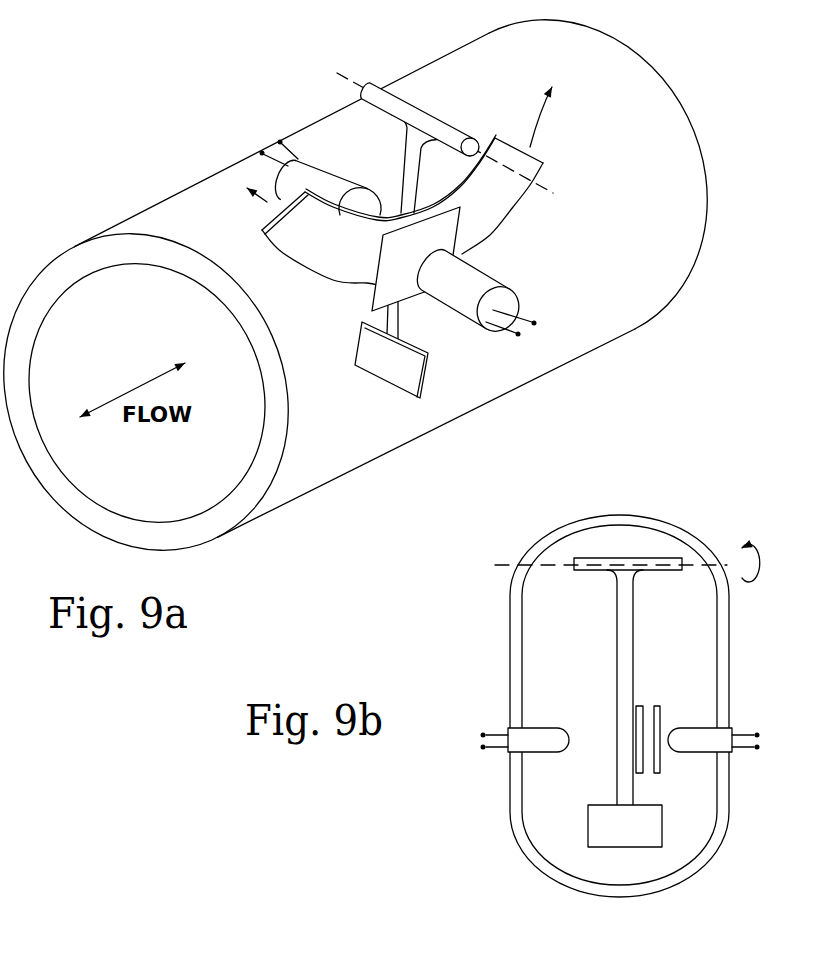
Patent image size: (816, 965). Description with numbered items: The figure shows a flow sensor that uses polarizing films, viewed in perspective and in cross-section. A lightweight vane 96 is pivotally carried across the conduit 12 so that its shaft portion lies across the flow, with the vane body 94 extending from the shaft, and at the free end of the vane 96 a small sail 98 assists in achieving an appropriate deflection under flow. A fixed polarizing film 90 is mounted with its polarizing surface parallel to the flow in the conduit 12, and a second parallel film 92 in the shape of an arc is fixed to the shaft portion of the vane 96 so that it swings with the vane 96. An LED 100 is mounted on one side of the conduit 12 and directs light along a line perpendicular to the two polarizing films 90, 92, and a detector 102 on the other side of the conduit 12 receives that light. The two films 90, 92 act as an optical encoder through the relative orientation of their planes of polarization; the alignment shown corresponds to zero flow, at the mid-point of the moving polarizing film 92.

In FIG. 9A, the conduit 12 is at (172, 217).
In FIG. 9B, the conduit 12 is at (577, 528).
In FIG. 9A, the fixed polarizing film 90 is at (372, 307).
In FIG. 9B, the fixed polarizing film 90 is at (669, 711).
In FIG. 9A, the second parallel film 92 is at (500, 207).
In FIG. 9B, the second parallel film 92 is at (644, 703).
In FIG. 9A, the stem 94 is at (404, 186).
In FIG. 9B, the stem 94 is at (623, 633).
In FIG. 9A, the lightweight vane 96 is at (446, 106).
In FIG. 9B, the lightweight vane 96 is at (643, 548).
In FIG. 9A, the small sail 98 is at (393, 370).
In FIG. 9B, the small sail 98 is at (637, 835).
In FIG. 9A, the LED 100 is at (455, 302).
In FIG. 9B, the LED 100 is at (703, 743).
In FIG. 9A, the detector 102 is at (318, 168).
In FIG. 9B, the detector 102 is at (545, 735).